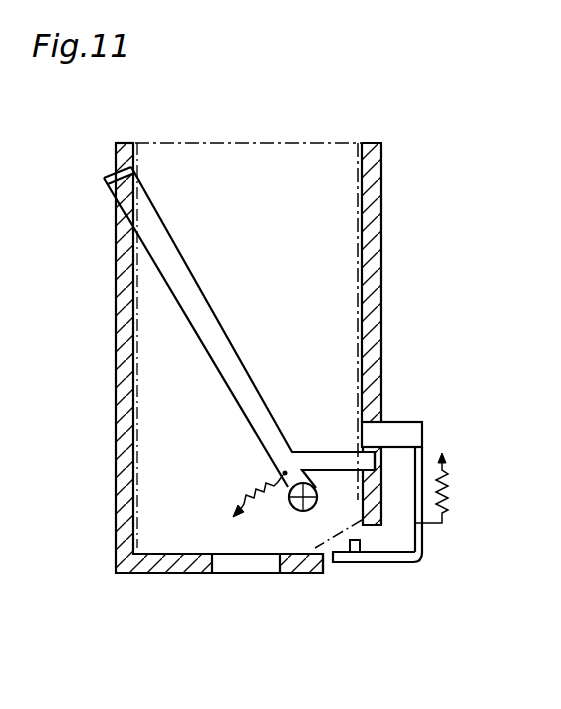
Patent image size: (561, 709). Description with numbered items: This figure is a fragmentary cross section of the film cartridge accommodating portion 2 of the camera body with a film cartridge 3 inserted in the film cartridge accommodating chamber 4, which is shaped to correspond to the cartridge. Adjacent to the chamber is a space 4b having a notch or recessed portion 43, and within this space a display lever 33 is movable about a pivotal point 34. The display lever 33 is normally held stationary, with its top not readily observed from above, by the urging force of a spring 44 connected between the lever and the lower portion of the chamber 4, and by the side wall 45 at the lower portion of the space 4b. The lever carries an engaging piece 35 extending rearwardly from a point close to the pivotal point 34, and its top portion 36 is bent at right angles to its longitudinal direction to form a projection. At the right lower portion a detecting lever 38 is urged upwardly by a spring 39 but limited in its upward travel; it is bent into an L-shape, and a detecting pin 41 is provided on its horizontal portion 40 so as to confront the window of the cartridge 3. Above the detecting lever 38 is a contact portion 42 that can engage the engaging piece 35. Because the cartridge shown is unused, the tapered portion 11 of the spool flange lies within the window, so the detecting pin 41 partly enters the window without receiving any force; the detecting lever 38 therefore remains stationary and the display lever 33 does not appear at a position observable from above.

The film cartridge accommodating portion 2 is at (125, 330).
The film cartridge 3 is at (295, 142).
The film cartridge accommodating recess or chamber 4 is at (360, 146).
The space 4b is at (128, 144).
The tapered portion 11 is at (319, 574).
The display lever 33 is at (207, 300).
The pivotal point 34 is at (292, 507).
The engaging piece 35 is at (323, 462).
The top portion 36 is at (112, 176).
The detecting lever 38 is at (415, 458).
The spring 39 is at (452, 492).
The horizontal portion 40 is at (360, 563).
The detecting pin 41 is at (358, 542).
The contact portion 42 is at (405, 430).
The notch or recessed portion 43 is at (115, 158).
The spring 44 is at (283, 473).
The side wall 45 is at (125, 248).